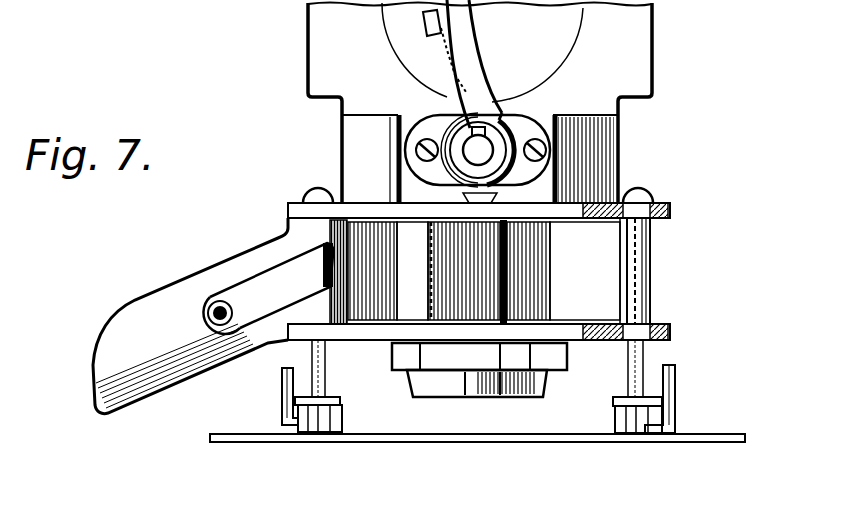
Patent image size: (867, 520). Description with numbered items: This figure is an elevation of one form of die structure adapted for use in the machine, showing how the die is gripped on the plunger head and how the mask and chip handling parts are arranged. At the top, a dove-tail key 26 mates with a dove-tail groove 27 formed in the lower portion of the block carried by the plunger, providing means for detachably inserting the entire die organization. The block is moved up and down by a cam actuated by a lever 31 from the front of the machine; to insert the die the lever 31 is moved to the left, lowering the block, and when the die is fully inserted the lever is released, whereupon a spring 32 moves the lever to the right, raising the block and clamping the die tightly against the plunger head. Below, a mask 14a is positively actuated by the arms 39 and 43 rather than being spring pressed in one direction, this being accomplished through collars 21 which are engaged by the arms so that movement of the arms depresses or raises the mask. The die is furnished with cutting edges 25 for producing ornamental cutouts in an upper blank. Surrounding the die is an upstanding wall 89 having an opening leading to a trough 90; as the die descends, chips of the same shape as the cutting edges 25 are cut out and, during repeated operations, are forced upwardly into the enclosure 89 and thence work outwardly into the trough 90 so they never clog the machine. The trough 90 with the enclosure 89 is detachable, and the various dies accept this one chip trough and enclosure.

The mask 14a is at (720, 444).
The collars 21 is at (340, 400).
The cutting edges 25 is at (533, 400).
The dove-tail key 26 is at (490, 200).
The dove-tail groove 27 is at (463, 197).
The lever 31 is at (455, 47).
The spring 32 is at (433, 22).
The arm 39 is at (291, 387).
The arm 43 is at (675, 393).
The upstanding wall 89 is at (545, 268).
The trough 90 is at (112, 368).